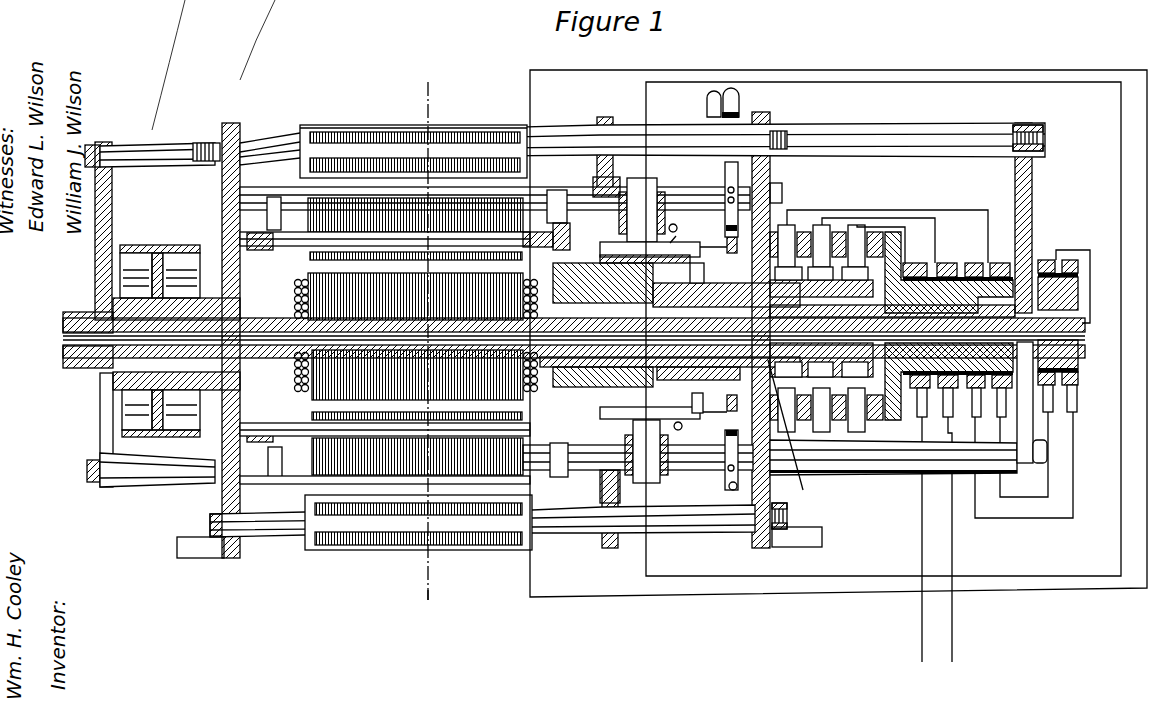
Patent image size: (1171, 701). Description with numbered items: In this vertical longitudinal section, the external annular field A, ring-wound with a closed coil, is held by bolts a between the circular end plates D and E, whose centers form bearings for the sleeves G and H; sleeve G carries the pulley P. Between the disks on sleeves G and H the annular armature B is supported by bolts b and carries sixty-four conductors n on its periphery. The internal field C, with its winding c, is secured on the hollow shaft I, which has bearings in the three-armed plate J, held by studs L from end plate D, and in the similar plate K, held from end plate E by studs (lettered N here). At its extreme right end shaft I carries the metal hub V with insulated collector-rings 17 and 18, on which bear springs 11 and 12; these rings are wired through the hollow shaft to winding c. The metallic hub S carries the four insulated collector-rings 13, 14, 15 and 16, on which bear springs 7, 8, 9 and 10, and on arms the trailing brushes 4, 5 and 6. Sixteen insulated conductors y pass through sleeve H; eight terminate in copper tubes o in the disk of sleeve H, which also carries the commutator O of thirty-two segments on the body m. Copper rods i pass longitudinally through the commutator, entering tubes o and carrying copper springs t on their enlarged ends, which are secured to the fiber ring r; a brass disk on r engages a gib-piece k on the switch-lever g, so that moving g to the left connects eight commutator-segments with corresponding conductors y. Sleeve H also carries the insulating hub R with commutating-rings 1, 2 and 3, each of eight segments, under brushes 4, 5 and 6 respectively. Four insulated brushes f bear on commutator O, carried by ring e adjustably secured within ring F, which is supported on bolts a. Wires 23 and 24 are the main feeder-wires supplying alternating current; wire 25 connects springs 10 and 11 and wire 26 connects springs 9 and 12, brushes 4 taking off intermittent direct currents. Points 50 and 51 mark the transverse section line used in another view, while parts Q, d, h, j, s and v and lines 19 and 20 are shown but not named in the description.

The external annular field A is at (388, 132).
The annular armature B is at (385, 341).
The internal field C is at (415, 336).
The end plate D is at (208, 340).
The end plate E is at (773, 189).
The ring F is at (604, 332).
The sleeve G is at (115, 312).
The sleeve H is at (794, 436).
The hollow shaft I is at (1092, 326).
The three-armed plate J is at (91, 314).
The plate K is at (1033, 218).
The studs L is at (152, 314).
The tie rod N is at (908, 302).
The commutator O is at (678, 433).
The pulley P is at (176, 330).
The lever Q is at (676, 230).
The hub R is at (821, 327).
The metallic hub S is at (949, 326).
The metal hub V is at (1058, 324).
The bolts a is at (627, 335).
The bolts b is at (396, 335).
The winding c is at (453, 392).
The rod d is at (495, 331).
The ring e is at (609, 179).
The insulated brushes f is at (643, 330).
The switch-lever g is at (731, 326).
The pin h is at (738, 489).
The copper rods i is at (697, 338).
The armature frame j is at (413, 113).
The gib-piece k is at (310, 256).
The commutator body m is at (777, 325).
The conductors n is at (553, 336).
The copper tubes o is at (551, 244).
The fiber ring r is at (713, 330).
The spring s is at (737, 324).
The copper springs t is at (650, 330).
The rod v is at (385, 421).
The conductors y is at (882, 312).
The commutating-ring 1 is at (788, 322).
The commutating-ring 2 is at (820, 322).
The commutating-ring 3 is at (855, 322).
The trailing brushes 4 is at (790, 328).
The trailing brushes 5 is at (829, 328).
The trailing brushes 6 is at (865, 328).
The spring 7 is at (922, 518).
The spring 8 is at (948, 518).
The spring 9 is at (1020, 446).
The spring 10 is at (1020, 436).
The spring 11 is at (1045, 406).
The spring 12 is at (1079, 406).
The collector-ring 13 is at (915, 263).
The collector-ring 14 is at (947, 263).
The collector-ring 15 is at (973, 263).
The collector-ring 16 is at (1000, 263).
The collector-ring 17 is at (1064, 284).
The collector-ring 18 is at (1068, 378).
The circuit wire 19 is at (888, 329).
The circuit wire 20 is at (842, 333).
The main feeder-wire 23 is at (917, 613).
The main feeder-wire 24 is at (949, 625).
The wire 25 is at (1045, 487).
The wire 26 is at (1072, 507).
The section line point 50 is at (423, 331).
The section line point 51 is at (429, 606).